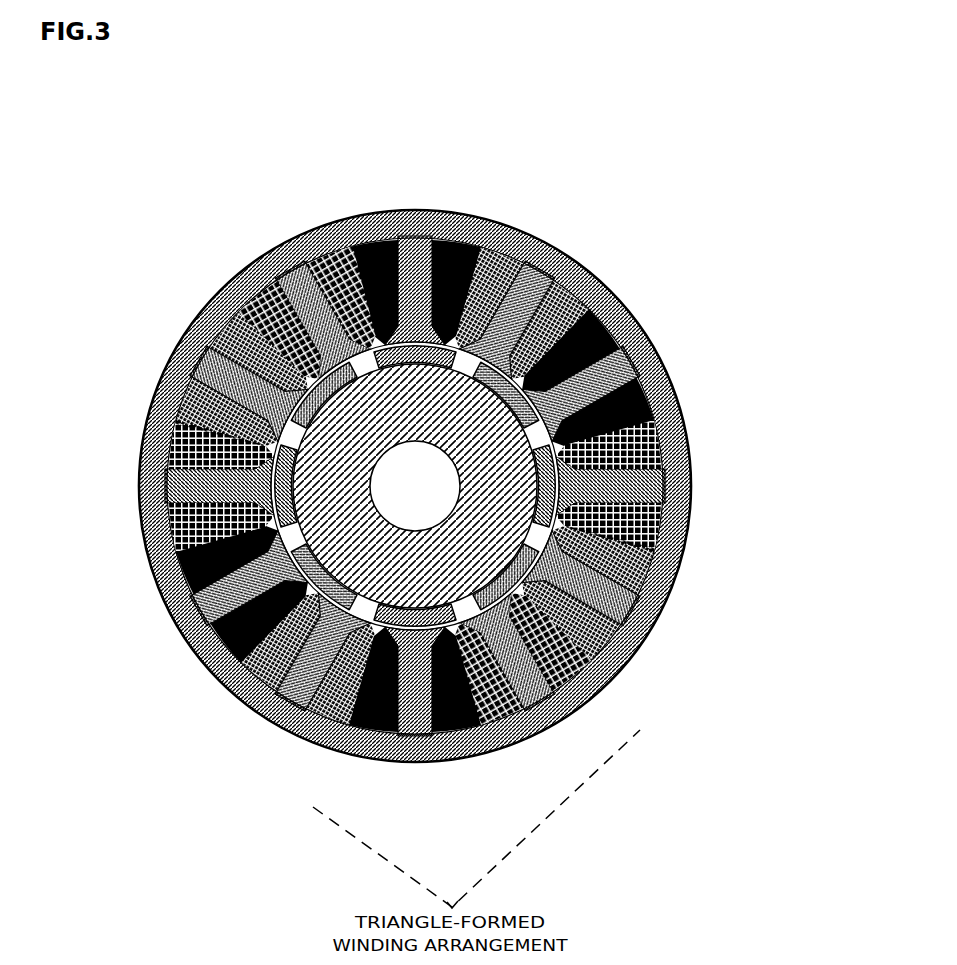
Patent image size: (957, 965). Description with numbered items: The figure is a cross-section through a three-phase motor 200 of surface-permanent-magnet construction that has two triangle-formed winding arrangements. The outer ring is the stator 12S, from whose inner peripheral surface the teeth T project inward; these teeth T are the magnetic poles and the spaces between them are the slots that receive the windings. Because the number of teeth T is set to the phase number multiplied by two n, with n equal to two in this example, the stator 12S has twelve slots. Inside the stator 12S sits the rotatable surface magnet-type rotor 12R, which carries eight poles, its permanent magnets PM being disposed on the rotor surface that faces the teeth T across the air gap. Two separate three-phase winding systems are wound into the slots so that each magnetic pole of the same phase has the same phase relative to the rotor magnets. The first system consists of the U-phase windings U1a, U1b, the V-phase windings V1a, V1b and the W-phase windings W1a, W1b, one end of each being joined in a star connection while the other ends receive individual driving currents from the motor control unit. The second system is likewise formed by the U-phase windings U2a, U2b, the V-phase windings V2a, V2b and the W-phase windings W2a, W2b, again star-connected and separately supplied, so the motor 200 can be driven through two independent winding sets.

The 3-phase motor 200 is at (665, 148).
The stator 12S is at (407, 227).
The surface magnet-type rotor 12R is at (340, 528).
The teeth T is at (523, 302).
The permanent magnets PM is at (405, 618).
The U-phase winding U1a is at (227, 437).
The U-phase winding U1b is at (465, 188).
The U-phase winding U2a is at (687, 400).
The U-phase winding U2b is at (313, 807).
The V-phase winding V1a is at (517, 187).
The V-phase winding V1b is at (623, 597).
The V-phase winding V2a is at (272, 697).
The V-phase winding V2b is at (222, 373).
The W-phase winding W1a is at (645, 733).
The W-phase winding W1b is at (290, 548).
The W-phase winding W2a is at (237, 235).
The W-phase winding W2b is at (667, 507).